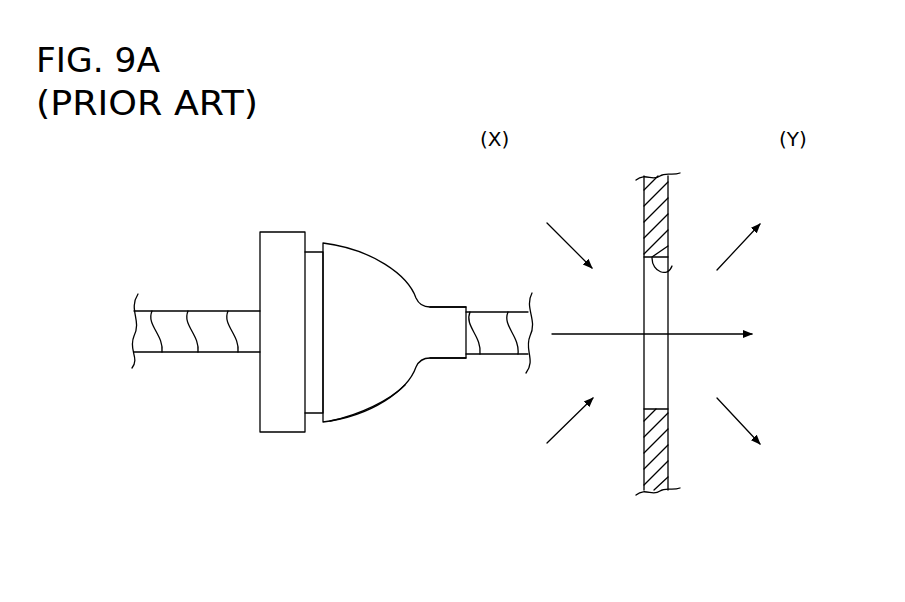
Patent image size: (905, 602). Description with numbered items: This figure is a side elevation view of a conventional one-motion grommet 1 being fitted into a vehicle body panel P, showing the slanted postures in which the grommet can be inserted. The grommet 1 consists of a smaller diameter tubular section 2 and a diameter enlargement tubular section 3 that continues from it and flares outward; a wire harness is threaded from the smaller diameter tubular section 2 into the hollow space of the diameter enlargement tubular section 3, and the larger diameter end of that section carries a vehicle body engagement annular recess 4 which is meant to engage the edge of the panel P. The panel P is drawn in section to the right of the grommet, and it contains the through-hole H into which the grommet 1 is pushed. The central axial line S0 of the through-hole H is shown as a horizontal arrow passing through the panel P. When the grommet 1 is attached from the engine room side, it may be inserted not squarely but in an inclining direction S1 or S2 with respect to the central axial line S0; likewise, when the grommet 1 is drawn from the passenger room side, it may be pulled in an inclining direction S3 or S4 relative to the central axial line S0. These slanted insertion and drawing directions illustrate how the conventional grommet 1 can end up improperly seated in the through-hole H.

The grommet 1 is at (366, 254).
The smaller diameter tubular section 2 is at (446, 352).
The diameter enlargement tubular section 3 is at (378, 395).
The vehicle body engagement annular recess 4 is at (316, 248).
The vehicle body panel P is at (644, 213).
The through-hole H is at (672, 266).
The central axial line S0 is at (652, 321).
The inclining direction S1 is at (570, 429).
The inclining direction S2 is at (569, 236).
The inclining direction S3 is at (732, 247).
The inclining direction S4 is at (738, 414).